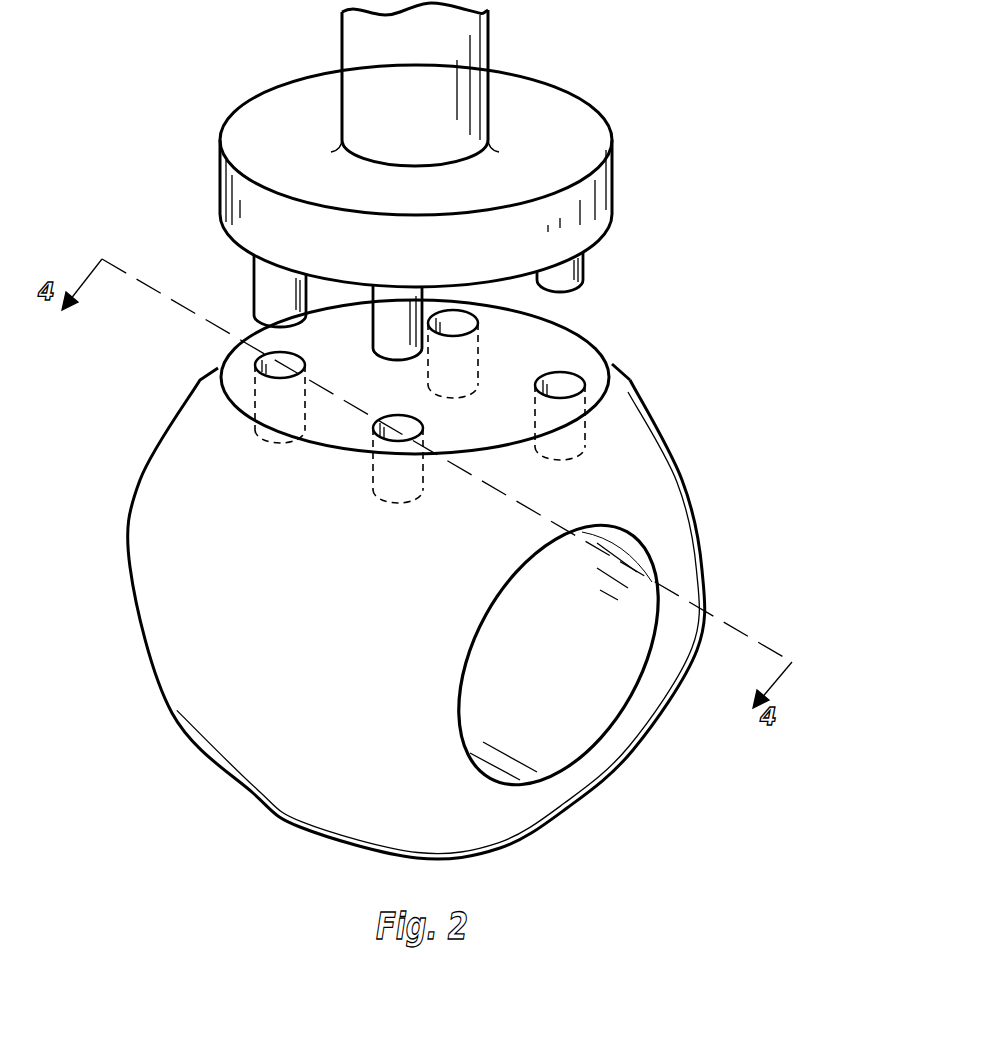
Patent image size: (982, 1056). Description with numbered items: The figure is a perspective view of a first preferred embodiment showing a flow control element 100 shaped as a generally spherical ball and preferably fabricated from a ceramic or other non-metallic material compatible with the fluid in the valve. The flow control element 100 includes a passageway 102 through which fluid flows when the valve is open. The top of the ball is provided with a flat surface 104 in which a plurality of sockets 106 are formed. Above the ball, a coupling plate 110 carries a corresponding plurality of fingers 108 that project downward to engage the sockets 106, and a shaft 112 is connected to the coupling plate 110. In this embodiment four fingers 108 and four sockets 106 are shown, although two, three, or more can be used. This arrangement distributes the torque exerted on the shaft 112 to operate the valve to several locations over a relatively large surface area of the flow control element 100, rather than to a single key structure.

The flow control element 100 is at (657, 475).
The passageway 102 is at (600, 678).
The flat surface 104 is at (498, 372).
The sockets 106 is at (257, 370).
The fingers 108 is at (272, 290).
The coupling plate 110 is at (567, 128).
The shaft 112 is at (460, 50).